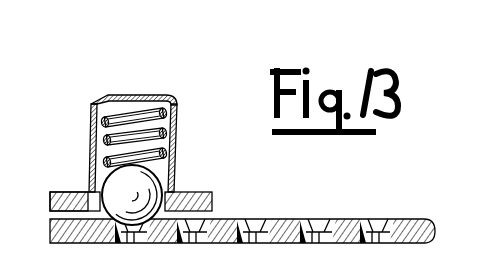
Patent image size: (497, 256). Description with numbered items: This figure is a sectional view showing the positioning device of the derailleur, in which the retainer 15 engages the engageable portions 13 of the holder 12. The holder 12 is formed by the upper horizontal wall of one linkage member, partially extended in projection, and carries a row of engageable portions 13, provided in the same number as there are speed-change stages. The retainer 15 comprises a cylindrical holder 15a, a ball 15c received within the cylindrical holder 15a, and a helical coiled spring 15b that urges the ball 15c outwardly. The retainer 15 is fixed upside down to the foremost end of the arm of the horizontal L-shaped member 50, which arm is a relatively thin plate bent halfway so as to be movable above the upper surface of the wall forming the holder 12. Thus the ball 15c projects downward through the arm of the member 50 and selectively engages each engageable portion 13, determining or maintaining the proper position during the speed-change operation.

The holder 12 is at (413, 222).
The engageable portions 13 is at (332, 228).
The retainer 15 is at (176, 113).
The cylindrical holder 15a is at (133, 94).
The helical coiled spring 15b is at (174, 138).
The ball 15c is at (112, 193).
The L-shaped member 50 is at (206, 192).